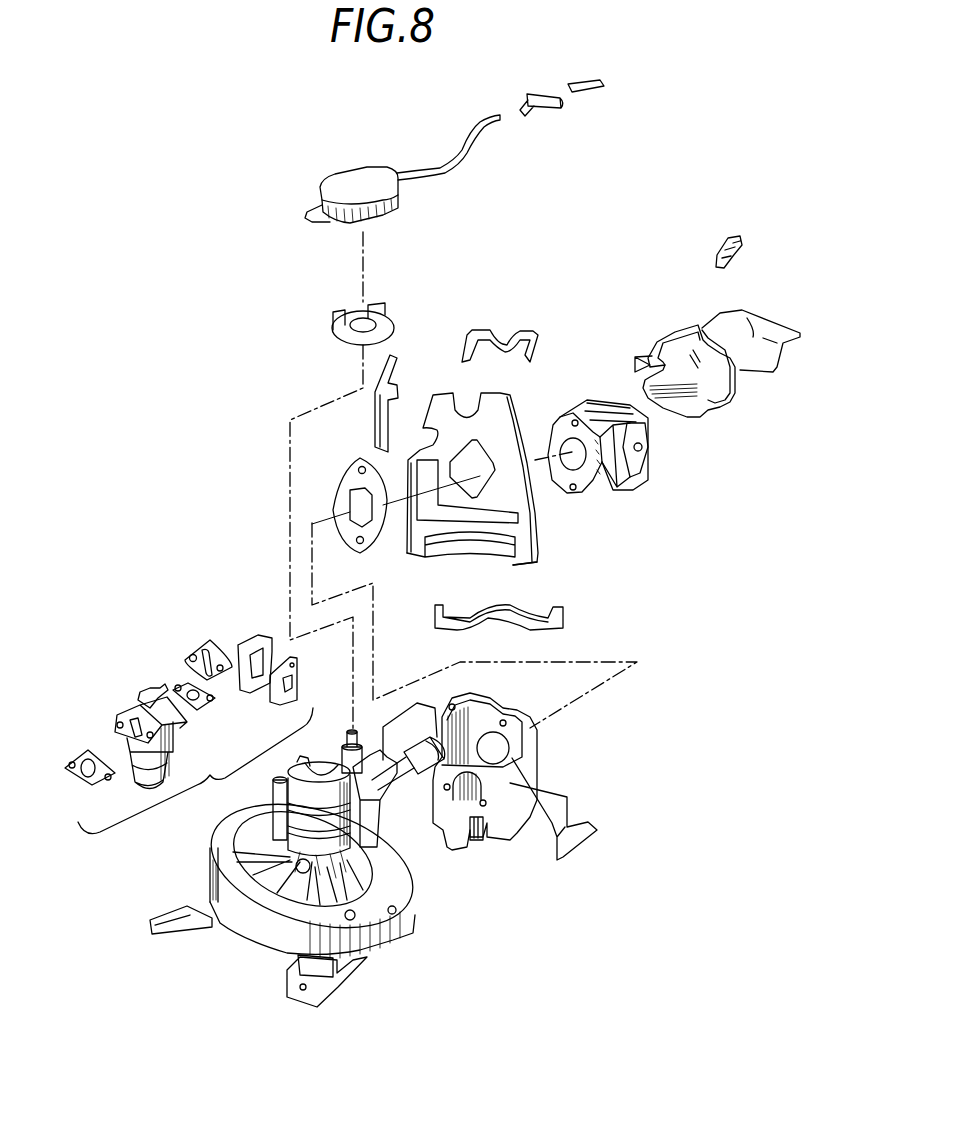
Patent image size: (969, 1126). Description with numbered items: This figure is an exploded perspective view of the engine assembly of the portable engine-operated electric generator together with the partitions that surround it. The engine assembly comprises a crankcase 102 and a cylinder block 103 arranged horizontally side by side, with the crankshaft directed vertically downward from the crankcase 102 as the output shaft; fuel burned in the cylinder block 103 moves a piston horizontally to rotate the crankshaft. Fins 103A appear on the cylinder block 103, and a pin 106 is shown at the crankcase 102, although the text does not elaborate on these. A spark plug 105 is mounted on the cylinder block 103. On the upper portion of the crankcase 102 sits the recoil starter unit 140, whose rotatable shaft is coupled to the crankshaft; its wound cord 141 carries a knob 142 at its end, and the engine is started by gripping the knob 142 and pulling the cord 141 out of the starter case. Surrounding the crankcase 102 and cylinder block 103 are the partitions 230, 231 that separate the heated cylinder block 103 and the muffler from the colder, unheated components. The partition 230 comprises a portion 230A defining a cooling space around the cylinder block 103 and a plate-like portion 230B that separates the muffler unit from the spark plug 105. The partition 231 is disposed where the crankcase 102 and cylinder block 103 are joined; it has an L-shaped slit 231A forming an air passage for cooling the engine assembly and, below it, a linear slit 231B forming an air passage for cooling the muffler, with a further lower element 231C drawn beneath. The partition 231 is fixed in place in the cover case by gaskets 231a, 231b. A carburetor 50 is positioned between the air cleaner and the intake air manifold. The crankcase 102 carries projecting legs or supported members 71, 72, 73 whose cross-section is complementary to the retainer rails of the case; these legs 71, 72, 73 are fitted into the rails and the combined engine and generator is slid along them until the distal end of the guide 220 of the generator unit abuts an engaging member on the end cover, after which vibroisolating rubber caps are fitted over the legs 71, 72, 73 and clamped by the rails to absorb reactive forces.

The carburetor 50 is at (189, 734).
The projecting leg 71 is at (333, 988).
The projecting leg 72 is at (153, 935).
The projecting leg 73 is at (588, 833).
The crankcase 102 is at (499, 798).
The cylinder block 103 is at (607, 428).
The cylinder head fins 103A is at (608, 410).
The spark plug 105 is at (727, 242).
The piston pin 106 is at (481, 840).
The recoil starter unit 140 is at (345, 187).
The cord 141 is at (483, 120).
The knob 142 is at (547, 108).
The guide 220 is at (250, 927).
The partition 230 is at (711, 359).
The portion 230A is at (678, 352).
The plate-like portion 230B is at (747, 332).
The partition 231 is at (470, 494).
The gasket 231a is at (488, 332).
The gasket 231b is at (397, 363).
The L-shaped slit 231A is at (390, 527).
The linear slit 231B is at (488, 540).
The insulator bottom plate 231C is at (567, 617).